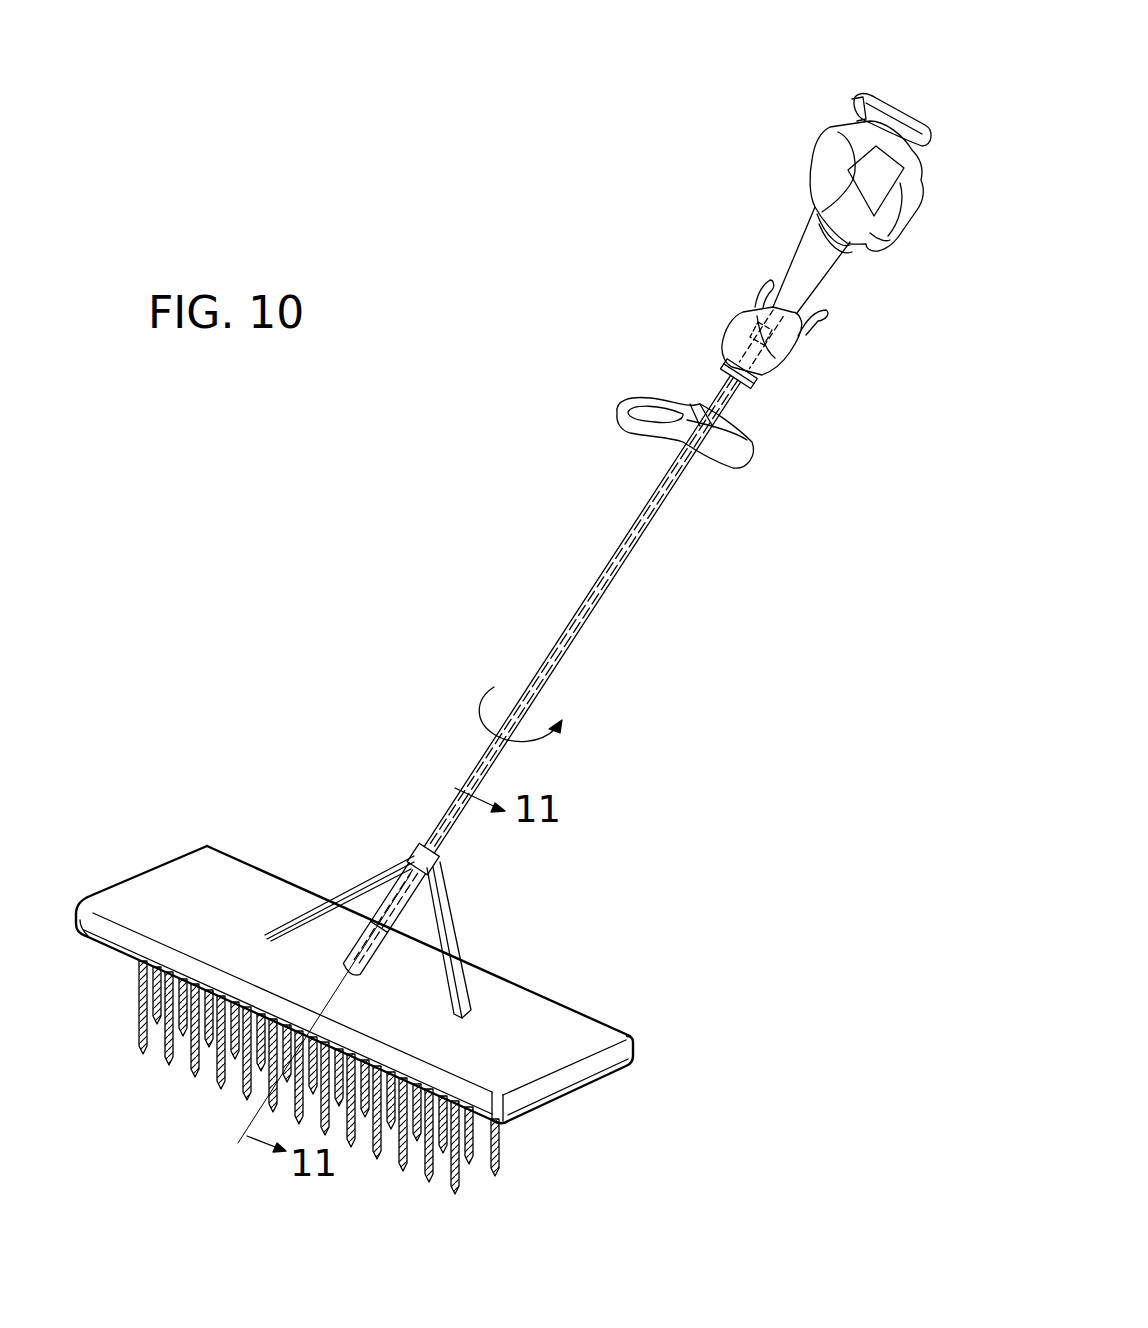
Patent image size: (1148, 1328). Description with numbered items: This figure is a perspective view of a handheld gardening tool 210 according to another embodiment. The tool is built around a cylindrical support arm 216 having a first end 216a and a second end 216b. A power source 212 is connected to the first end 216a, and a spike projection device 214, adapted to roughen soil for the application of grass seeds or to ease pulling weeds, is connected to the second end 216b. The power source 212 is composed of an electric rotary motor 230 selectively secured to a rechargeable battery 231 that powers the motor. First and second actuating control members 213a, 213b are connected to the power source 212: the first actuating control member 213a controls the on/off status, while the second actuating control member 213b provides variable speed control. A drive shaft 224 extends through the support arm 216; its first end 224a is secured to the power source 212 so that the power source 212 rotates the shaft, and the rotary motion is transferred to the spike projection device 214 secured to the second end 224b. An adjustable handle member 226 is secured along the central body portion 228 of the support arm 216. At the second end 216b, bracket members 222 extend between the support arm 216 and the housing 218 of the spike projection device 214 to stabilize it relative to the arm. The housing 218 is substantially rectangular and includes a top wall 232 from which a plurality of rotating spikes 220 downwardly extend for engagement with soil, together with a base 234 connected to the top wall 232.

The handheld gardening tool 210 is at (465, 585).
The power source 212 is at (808, 188).
The first actuating control member 213a is at (827, 323).
The second actuating control member 213b is at (762, 283).
The spike projection device 214 is at (565, 1003).
The support arm 216 is at (555, 663).
The first end of support arm 216a is at (723, 370).
The second end of support arm 216b is at (380, 918).
The housing 218 is at (213, 870).
The spikes 220 is at (220, 1076).
The bracket members 222 is at (447, 906).
The drive shaft 224 is at (602, 593).
The first end of drive shaft 224a is at (760, 372).
The second end of drive shaft 224b is at (378, 968).
The adjustable handle member 226 is at (615, 411).
The central body portion 228 is at (670, 493).
The electric rotary motor 230 is at (775, 305).
The rechargeable battery 231 is at (897, 105).
The top wall 232 is at (147, 885).
The base 234 is at (103, 953).